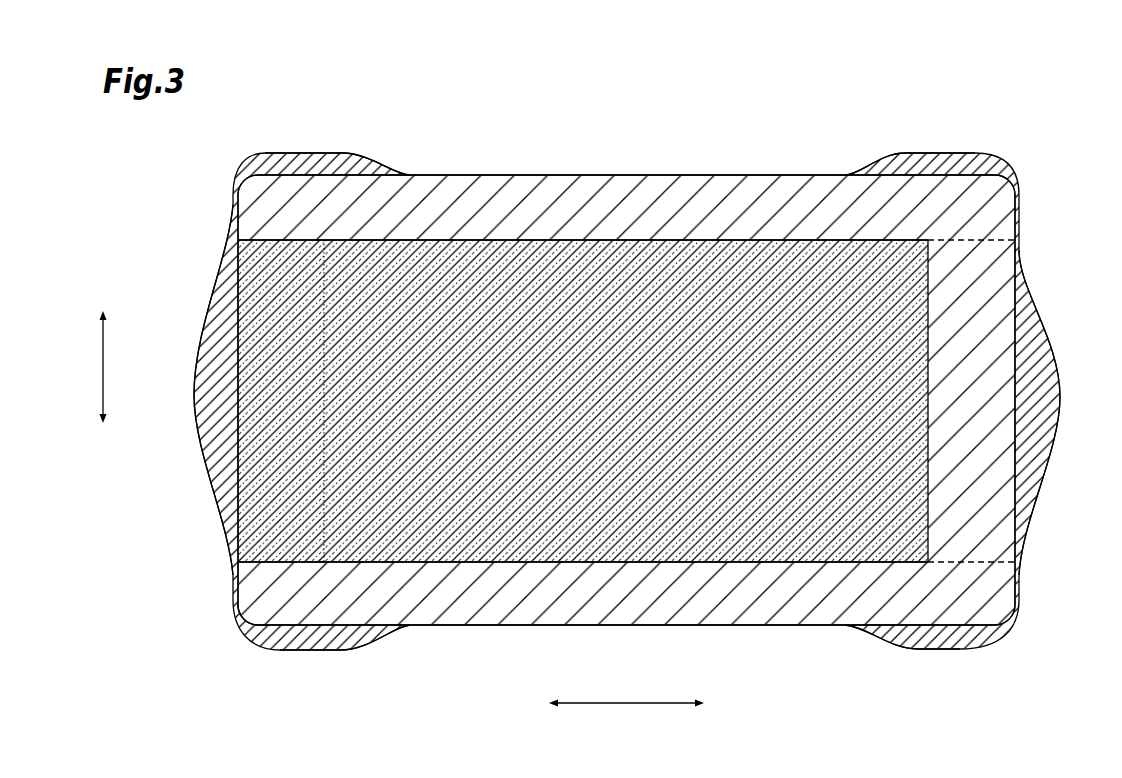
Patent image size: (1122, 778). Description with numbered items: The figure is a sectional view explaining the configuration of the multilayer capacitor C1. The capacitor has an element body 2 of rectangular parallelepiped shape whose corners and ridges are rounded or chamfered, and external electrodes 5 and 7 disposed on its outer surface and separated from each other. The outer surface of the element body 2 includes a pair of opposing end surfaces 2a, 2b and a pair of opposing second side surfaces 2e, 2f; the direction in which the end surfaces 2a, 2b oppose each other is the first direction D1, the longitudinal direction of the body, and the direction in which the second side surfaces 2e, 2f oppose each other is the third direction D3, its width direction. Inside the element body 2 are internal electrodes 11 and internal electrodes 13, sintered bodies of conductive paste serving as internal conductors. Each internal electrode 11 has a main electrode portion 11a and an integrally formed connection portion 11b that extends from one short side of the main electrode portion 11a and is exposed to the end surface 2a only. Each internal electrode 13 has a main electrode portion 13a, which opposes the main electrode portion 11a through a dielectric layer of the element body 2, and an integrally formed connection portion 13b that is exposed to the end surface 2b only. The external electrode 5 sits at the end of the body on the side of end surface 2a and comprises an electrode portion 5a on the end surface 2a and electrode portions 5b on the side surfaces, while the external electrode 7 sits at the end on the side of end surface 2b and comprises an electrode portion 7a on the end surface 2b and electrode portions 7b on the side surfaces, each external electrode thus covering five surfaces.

The multilayer capacitor C1 is at (1000, 133).
The element body 2 is at (558, 178).
The end surface 2a is at (213, 493).
The end surface 2b is at (1015, 448).
The second side surface 2e is at (737, 176).
The second side surface 2f is at (695, 627).
The external electrode 5 is at (205, 303).
The electrode portion 5a is at (208, 412).
The electrode portion 5b is at (325, 160).
The external electrode 7 is at (1047, 323).
The electrode portion 7a is at (1053, 387).
The electrode portion 7b is at (934, 160).
The internal electrode 11 is at (480, 240).
The main electrode portion 11a is at (648, 240).
The connection portion 11b is at (240, 625).
The internal electrode 13 is at (598, 565).
The main electrode portion 13a is at (783, 562).
The connection portion 13b is at (990, 562).
The first direction D1 is at (612, 704).
The third direction D3 is at (103, 347).